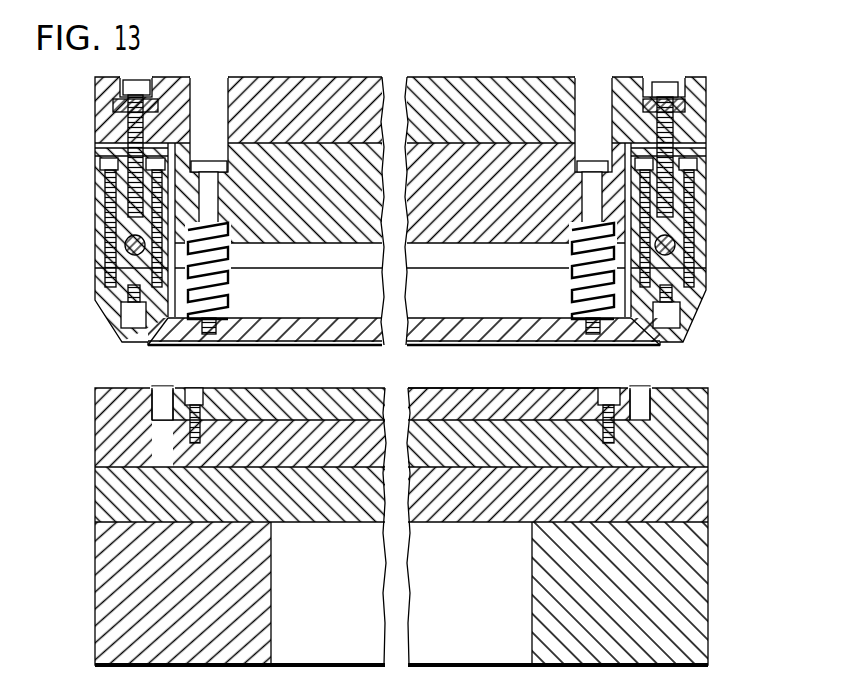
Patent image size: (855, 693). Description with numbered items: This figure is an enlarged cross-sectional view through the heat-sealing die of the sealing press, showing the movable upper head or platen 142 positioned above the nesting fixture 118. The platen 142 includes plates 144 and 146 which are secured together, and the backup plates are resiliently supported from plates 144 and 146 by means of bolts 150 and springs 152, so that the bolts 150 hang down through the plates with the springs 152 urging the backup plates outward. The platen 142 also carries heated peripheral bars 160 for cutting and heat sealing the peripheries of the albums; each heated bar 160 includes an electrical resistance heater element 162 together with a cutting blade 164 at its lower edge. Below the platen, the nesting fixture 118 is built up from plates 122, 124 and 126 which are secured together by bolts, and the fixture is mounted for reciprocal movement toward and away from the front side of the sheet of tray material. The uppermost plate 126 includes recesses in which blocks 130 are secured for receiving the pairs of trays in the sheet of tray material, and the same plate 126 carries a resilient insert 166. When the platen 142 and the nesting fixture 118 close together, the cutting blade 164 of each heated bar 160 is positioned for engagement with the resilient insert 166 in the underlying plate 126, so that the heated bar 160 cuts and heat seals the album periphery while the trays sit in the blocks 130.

The nesting fixture 118 is at (92, 574).
The plate 122 is at (110, 626).
The plate 124 is at (95, 491).
The uppermost plate 126 is at (95, 426).
The block 130 is at (510, 398).
The upper head or platen 142 is at (712, 78).
The plate 144 is at (697, 128).
The plate 146 is at (463, 174).
The bolt 150 is at (208, 163).
The spring 152 is at (573, 278).
The heated peripheral bar 160 is at (106, 200).
The electrical resistance heater element 162 is at (125, 246).
The cutting blade 164 is at (146, 344).
The resilient insert 166 is at (150, 390).